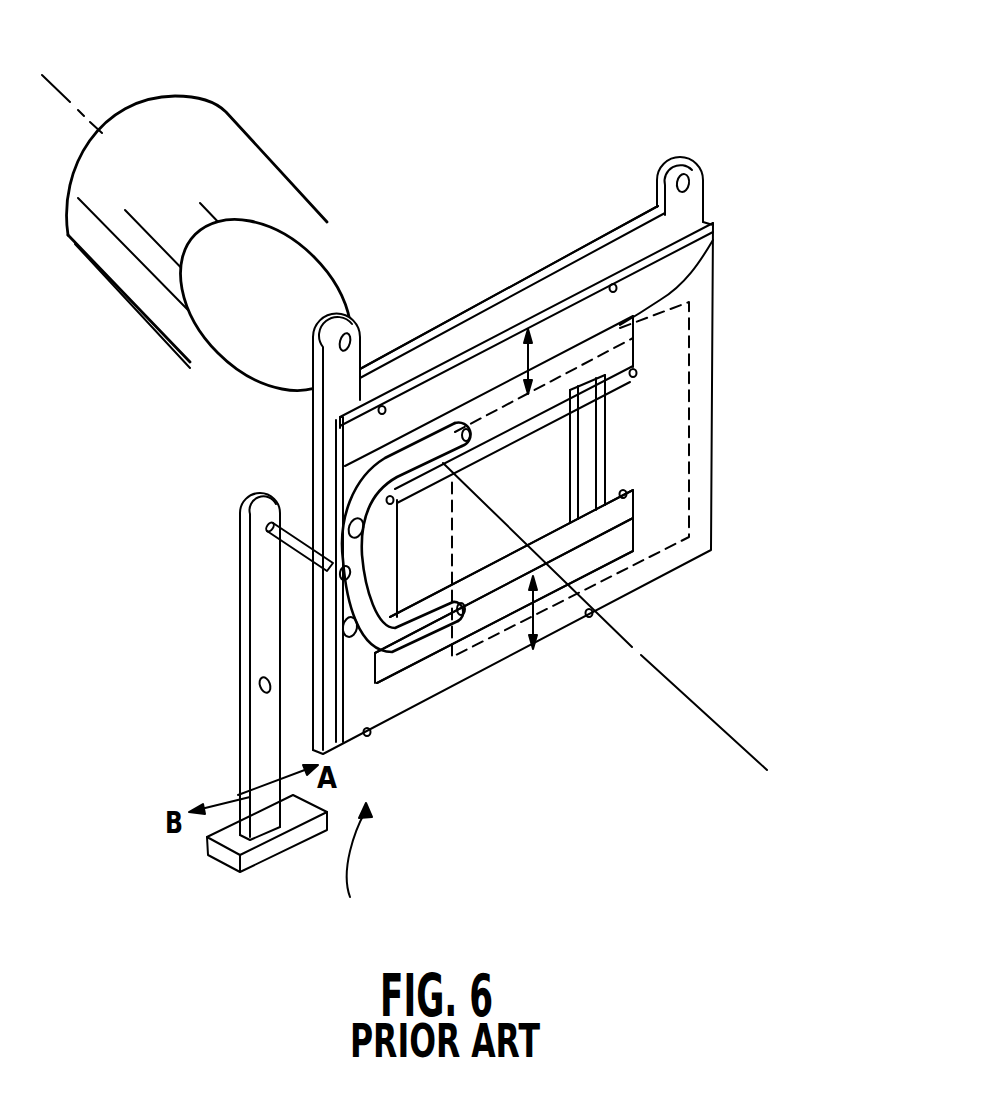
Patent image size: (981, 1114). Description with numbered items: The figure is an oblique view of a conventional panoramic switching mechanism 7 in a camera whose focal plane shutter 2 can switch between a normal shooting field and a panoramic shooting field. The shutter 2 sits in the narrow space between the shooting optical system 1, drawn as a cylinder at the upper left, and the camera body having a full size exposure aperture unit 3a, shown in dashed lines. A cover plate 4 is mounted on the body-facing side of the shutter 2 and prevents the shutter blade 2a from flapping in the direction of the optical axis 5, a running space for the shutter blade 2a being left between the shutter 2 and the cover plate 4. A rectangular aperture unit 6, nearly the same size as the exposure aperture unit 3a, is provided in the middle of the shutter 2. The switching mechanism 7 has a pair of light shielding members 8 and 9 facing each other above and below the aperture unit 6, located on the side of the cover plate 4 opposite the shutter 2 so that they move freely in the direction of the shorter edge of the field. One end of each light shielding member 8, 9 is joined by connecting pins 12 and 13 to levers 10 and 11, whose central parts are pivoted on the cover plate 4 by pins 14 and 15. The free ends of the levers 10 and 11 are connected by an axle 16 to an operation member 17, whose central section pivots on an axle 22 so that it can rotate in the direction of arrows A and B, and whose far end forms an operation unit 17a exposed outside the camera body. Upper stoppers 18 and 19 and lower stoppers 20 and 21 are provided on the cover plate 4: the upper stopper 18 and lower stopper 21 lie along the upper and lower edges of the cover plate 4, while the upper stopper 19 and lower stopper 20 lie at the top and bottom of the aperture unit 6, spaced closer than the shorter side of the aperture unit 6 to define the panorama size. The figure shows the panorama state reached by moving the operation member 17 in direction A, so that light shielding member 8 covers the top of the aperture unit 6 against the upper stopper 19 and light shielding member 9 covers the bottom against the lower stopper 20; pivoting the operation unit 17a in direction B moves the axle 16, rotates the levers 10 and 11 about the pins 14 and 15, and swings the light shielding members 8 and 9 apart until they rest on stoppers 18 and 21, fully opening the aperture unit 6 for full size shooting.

The shooting optical system 1 is at (229, 137).
The focal plane shutter 2 is at (692, 146).
The shutter blade 2a is at (440, 547).
The full size exposure aperture unit 3a is at (706, 318).
The cover plate 4 is at (718, 277).
The optical axis 5 is at (740, 740).
The rectangular aperture unit 6 is at (562, 464).
The panoramic switching mechanism 7 is at (392, 921).
The light shielding member 8 is at (716, 245).
The light shielding member 9 is at (633, 548).
The lever 10 is at (368, 492).
The lever 11 is at (422, 630).
The connecting pin 12 is at (466, 430).
The connecting pin 13 is at (462, 613).
The pin 14 is at (351, 520).
The pin 15 is at (343, 629).
The axle 16 is at (298, 552).
The operation member 17 is at (262, 745).
The operation unit 17a is at (277, 845).
The upper stopper 18 is at (382, 406).
The upper stopper 19 is at (440, 520).
The lower stopper 20 is at (610, 522).
The lower stopper 21 is at (588, 614).
The axle 22 is at (260, 686).